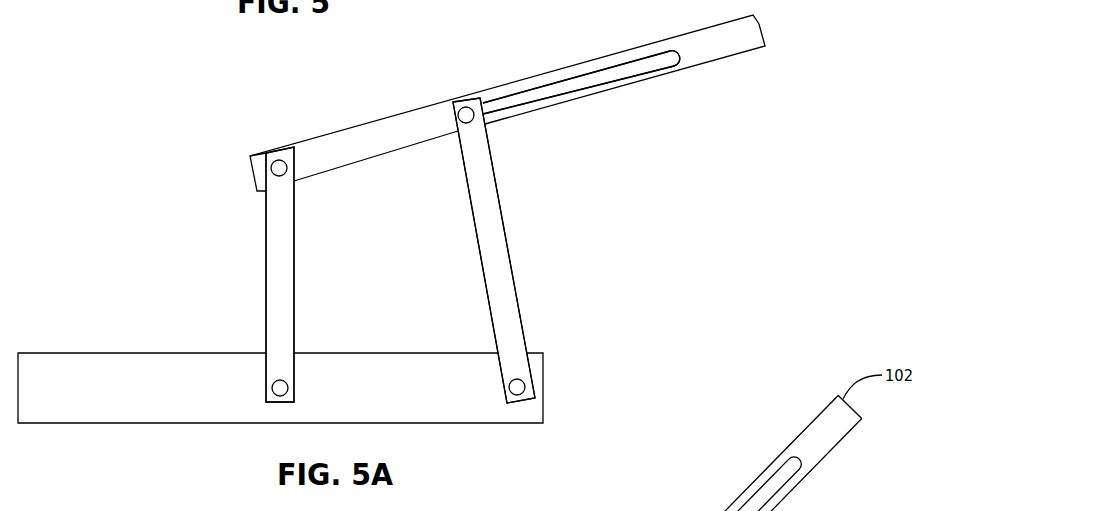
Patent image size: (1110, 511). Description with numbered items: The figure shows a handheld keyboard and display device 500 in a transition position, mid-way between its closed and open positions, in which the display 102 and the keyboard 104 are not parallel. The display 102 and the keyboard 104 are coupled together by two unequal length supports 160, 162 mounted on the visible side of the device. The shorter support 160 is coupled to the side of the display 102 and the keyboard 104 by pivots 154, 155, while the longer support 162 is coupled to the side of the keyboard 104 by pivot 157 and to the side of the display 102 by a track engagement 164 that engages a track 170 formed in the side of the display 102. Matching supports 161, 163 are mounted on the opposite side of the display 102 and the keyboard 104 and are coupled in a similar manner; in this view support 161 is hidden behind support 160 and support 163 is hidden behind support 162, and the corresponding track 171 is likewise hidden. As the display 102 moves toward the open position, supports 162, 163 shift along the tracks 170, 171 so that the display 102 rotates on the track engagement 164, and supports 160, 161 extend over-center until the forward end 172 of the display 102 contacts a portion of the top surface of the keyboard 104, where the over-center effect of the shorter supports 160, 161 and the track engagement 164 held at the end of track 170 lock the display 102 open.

The handheld keyboard and display device 500 is at (152, 136).
The display 102 is at (755, 14).
The keyboard 104 is at (545, 395).
The pivot 154 is at (285, 167).
The pivot 155 is at (288, 390).
The pivot 157 is at (509, 388).
The support 160 is at (295, 318).
The support 161 is at (344, 274).
The support 162 is at (519, 316).
The support 163 is at (550, 250).
The track engagement 164 is at (474, 115).
The track 170 is at (563, 88).
The track 171 is at (581, 68).
The forward end 172 is at (252, 172).